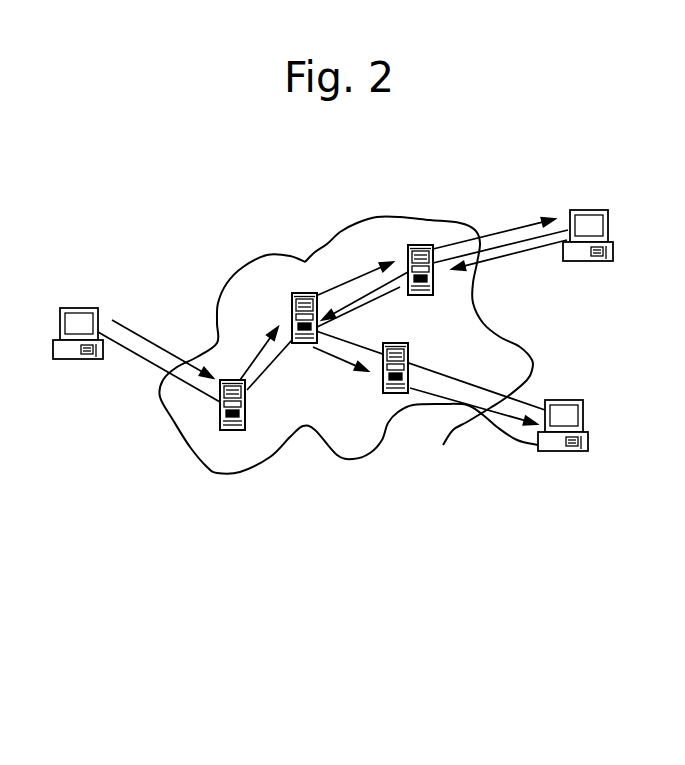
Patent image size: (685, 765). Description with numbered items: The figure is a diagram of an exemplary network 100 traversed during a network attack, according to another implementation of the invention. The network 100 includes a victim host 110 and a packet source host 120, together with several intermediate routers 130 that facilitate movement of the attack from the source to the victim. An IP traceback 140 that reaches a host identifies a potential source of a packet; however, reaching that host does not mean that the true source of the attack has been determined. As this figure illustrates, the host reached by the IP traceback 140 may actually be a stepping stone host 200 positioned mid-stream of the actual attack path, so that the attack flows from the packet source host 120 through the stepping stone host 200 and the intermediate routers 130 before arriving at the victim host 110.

The network 100 is at (178, 256).
The victim host 110 is at (75, 378).
The packet source host 120 is at (538, 442).
The intermediate routers 130 is at (293, 290).
The IP traceback 140 is at (497, 233).
The stepping stone host 200 is at (613, 252).